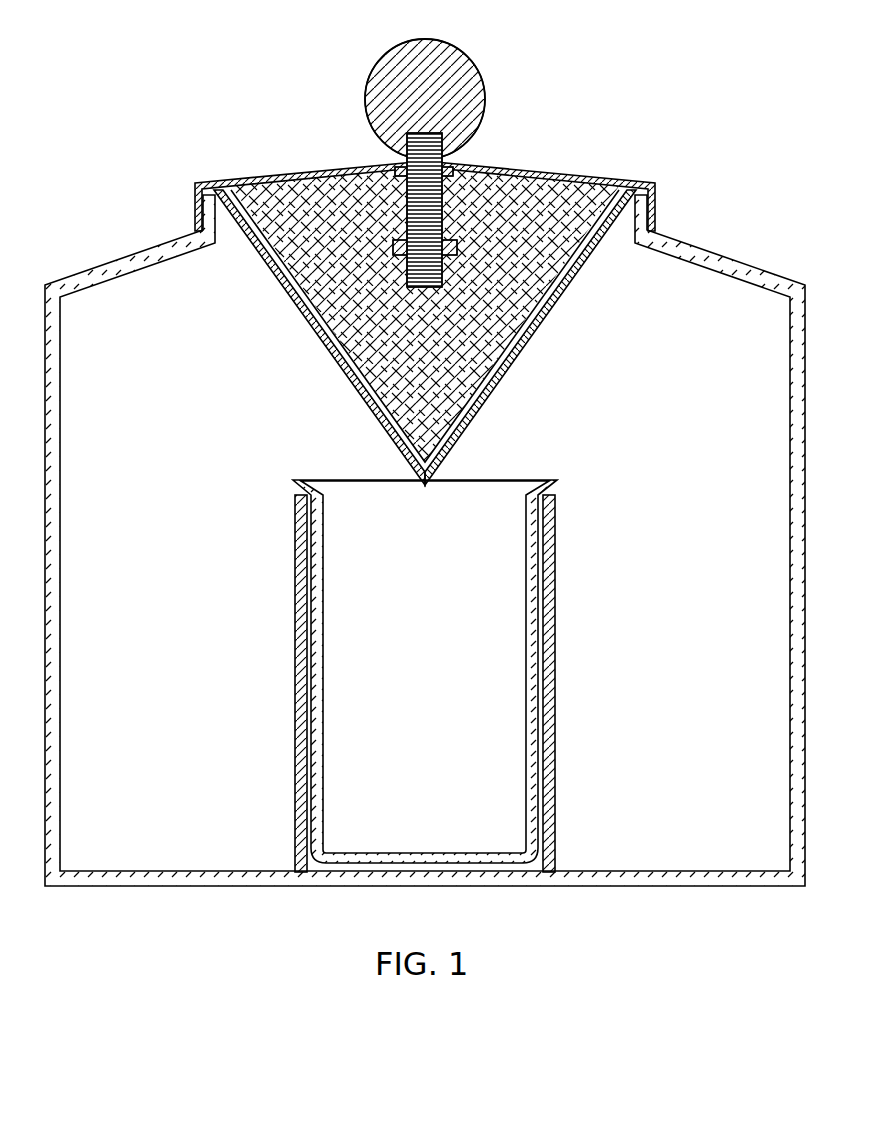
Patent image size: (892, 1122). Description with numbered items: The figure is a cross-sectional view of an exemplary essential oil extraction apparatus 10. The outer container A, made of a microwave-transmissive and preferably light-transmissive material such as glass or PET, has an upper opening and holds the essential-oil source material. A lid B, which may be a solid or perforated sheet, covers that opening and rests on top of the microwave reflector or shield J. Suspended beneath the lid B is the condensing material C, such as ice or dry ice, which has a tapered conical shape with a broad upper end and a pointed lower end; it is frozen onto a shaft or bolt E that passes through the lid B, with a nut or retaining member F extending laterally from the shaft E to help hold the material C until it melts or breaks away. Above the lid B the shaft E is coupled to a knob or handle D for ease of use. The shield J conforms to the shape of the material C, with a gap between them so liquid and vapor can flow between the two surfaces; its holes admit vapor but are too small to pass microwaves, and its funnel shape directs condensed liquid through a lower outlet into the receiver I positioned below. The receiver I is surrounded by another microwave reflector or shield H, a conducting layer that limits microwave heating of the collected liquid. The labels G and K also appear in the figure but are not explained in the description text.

The apparatus 10 is at (177, 54).
The outer container A is at (78, 274).
The lid B is at (243, 179).
The condensing material C is at (297, 187).
The knob or handle D is at (390, 50).
The shaft or bolt E is at (453, 173).
The nut or retaining member F is at (457, 245).
The threaded rod G is at (398, 171).
The microwave reflector or shield H is at (555, 827).
The receiver I is at (432, 852).
The microwave reflector or shield J is at (598, 254).
The interior chamber K is at (172, 834).